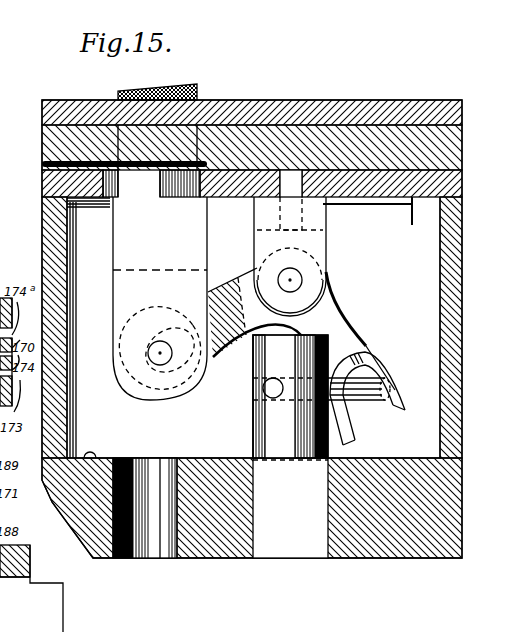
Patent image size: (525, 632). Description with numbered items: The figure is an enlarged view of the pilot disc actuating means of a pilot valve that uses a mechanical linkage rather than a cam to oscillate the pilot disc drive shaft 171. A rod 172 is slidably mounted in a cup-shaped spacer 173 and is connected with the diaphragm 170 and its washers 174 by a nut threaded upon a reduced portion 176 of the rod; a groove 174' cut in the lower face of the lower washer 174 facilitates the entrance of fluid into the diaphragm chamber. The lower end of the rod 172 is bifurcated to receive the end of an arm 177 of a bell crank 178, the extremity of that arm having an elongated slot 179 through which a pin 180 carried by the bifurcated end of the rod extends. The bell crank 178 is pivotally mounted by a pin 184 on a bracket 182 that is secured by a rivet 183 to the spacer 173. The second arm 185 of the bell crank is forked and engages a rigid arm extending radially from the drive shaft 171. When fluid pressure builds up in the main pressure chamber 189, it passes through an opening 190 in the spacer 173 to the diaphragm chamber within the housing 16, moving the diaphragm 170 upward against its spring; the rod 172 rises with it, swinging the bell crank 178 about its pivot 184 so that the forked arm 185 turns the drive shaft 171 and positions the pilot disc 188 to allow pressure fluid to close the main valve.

The housing 16 is at (252, 329).
The diaphragm 170 is at (40, 104).
The washer 174 is at (231, 140).
The groove 174' is at (103, 154).
The cup-shaped spacer 173 is at (42, 186).
The reduced portion 176 is at (198, 92).
The opening 190 is at (184, 198).
The rod 172 is at (113, 330).
The rivet 183 is at (276, 218).
The bracket 182 is at (325, 243).
The pin 184 is at (301, 277).
The arm 177 is at (207, 366).
The pin 180 is at (148, 366).
The elongated slot 179 is at (183, 360).
The bell crank 178 is at (334, 312).
The pilot disc drive shaft 171 is at (260, 440).
The second arm 185 is at (388, 372).
The pilot disc 188 is at (368, 402).
The main pressure chamber 189 is at (90, 460).